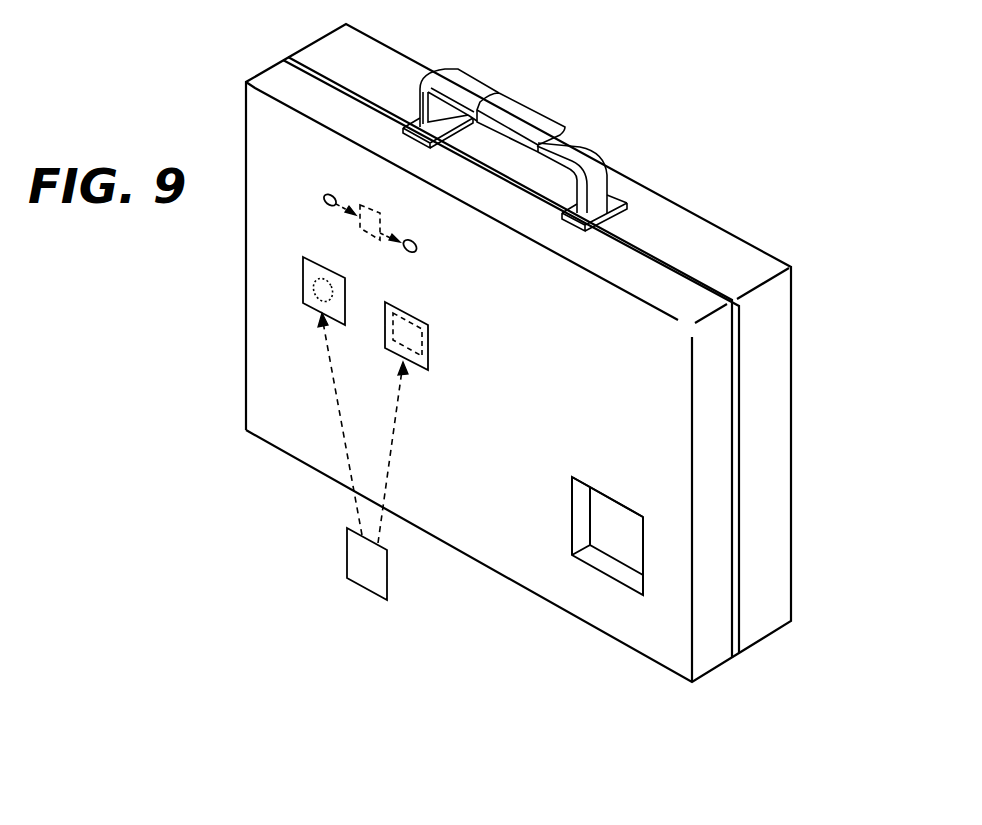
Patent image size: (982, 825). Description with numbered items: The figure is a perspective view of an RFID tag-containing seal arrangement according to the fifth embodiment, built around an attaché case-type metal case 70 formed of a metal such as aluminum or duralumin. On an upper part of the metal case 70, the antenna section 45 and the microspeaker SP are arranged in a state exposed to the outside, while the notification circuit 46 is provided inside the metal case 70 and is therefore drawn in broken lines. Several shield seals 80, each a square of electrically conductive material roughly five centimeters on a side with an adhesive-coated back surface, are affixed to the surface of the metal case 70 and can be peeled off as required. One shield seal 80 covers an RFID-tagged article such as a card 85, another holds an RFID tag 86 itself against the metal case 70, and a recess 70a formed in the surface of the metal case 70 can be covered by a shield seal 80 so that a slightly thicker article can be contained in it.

The metal case 70 is at (822, 361).
The recess 70a is at (620, 512).
The shield seal 80 is at (302, 278).
The card 85 is at (425, 343).
The RFID tag 86 is at (328, 273).
The antenna section 45 is at (326, 196).
The notification circuit 46 is at (361, 205).
The microspeaker SP is at (416, 251).